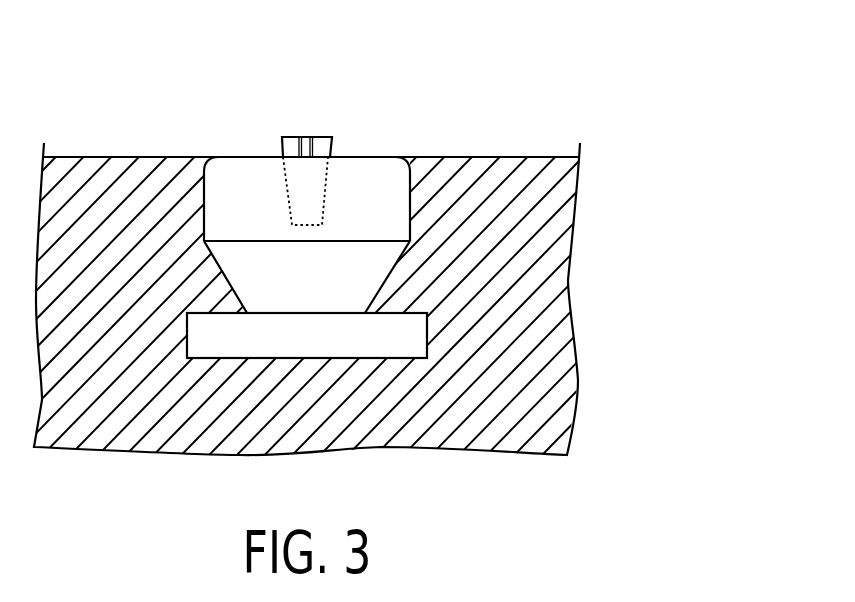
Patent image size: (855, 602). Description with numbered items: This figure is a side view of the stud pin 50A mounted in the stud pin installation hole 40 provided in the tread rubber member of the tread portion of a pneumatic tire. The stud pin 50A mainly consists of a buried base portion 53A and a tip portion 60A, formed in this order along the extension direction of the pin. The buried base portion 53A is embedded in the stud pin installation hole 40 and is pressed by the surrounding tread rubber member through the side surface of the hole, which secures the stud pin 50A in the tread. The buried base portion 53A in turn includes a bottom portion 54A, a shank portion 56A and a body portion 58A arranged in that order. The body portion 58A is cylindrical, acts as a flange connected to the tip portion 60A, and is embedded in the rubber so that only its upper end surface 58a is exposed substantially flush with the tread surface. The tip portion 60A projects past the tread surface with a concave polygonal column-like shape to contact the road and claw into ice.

The stud pin installation hole 40 is at (392, 157).
The stud pin 50A is at (457, 209).
The buried base portion 53A is at (458, 209).
The bottom portion 54A is at (402, 333).
The shank portion 56A is at (367, 275).
The body portion 58A is at (423, 136).
The upper end surface 58a is at (257, 157).
The tip portion 60A is at (315, 137).